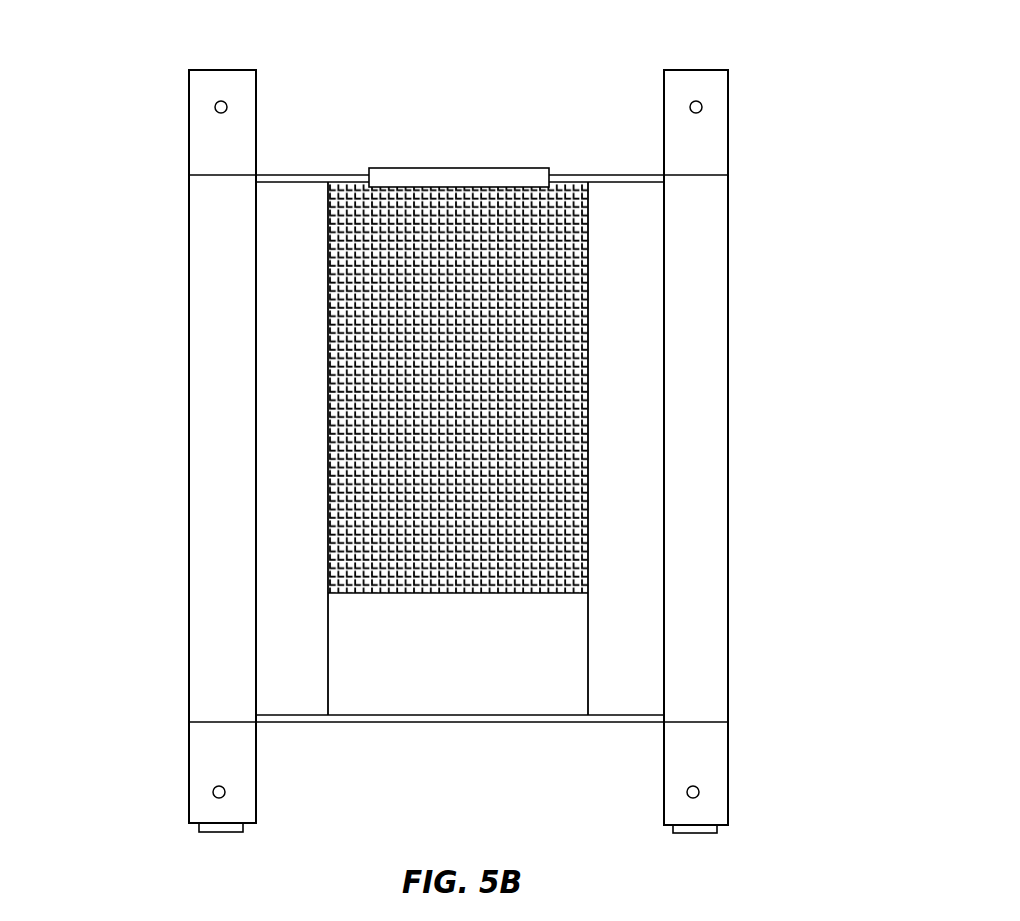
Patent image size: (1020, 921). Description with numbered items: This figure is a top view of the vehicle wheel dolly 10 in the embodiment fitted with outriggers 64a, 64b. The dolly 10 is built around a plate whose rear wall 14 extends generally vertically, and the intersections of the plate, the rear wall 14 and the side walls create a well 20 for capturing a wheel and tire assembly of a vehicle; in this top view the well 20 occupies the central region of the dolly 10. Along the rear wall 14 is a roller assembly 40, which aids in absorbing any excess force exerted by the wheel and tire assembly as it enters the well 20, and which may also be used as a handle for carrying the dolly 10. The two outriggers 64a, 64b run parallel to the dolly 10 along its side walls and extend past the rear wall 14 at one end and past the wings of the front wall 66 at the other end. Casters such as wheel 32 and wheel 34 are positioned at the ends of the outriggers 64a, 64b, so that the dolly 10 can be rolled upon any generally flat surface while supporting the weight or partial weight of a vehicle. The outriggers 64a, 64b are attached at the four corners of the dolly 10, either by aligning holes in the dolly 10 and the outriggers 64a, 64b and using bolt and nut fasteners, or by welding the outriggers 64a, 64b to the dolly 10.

The vehicle wheel dolly 10 is at (678, 35).
The rear wall 14 is at (296, 180).
The well 20 is at (476, 282).
The wheel or caster 32 is at (688, 825).
The wheel or caster 34 is at (213, 830).
The roller assembly 40 is at (477, 178).
The outrigger 64a is at (219, 148).
The outrigger 64b is at (707, 142).
The front wall 66 is at (299, 722).